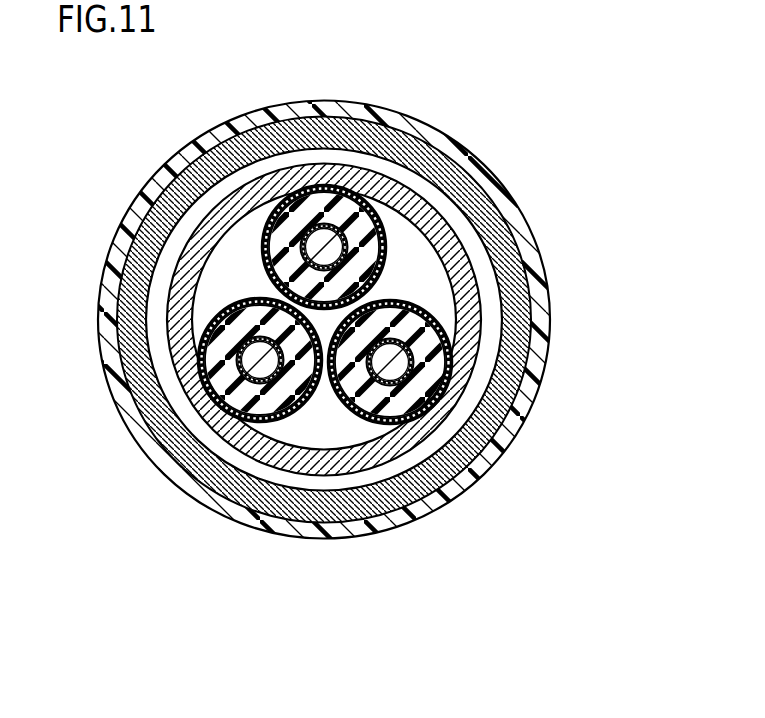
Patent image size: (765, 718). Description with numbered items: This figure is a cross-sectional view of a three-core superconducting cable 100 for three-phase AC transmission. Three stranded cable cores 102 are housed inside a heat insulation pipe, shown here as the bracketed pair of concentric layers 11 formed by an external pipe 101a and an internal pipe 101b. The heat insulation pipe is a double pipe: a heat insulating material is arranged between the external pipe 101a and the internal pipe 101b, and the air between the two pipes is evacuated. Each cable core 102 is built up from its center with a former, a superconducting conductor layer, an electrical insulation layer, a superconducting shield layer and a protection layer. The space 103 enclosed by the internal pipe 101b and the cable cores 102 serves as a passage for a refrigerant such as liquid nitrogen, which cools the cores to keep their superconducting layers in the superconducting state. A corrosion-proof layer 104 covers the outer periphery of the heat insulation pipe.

The superconducting cable 100 is at (262, 535).
The sheath 11 is at (417, 294).
The external pipe 101a is at (413, 311).
The internal pipe 101b is at (388, 294).
The cable core 102 is at (387, 423).
The space 103 is at (407, 320).
The corrosion-proof layer 104 is at (364, 319).